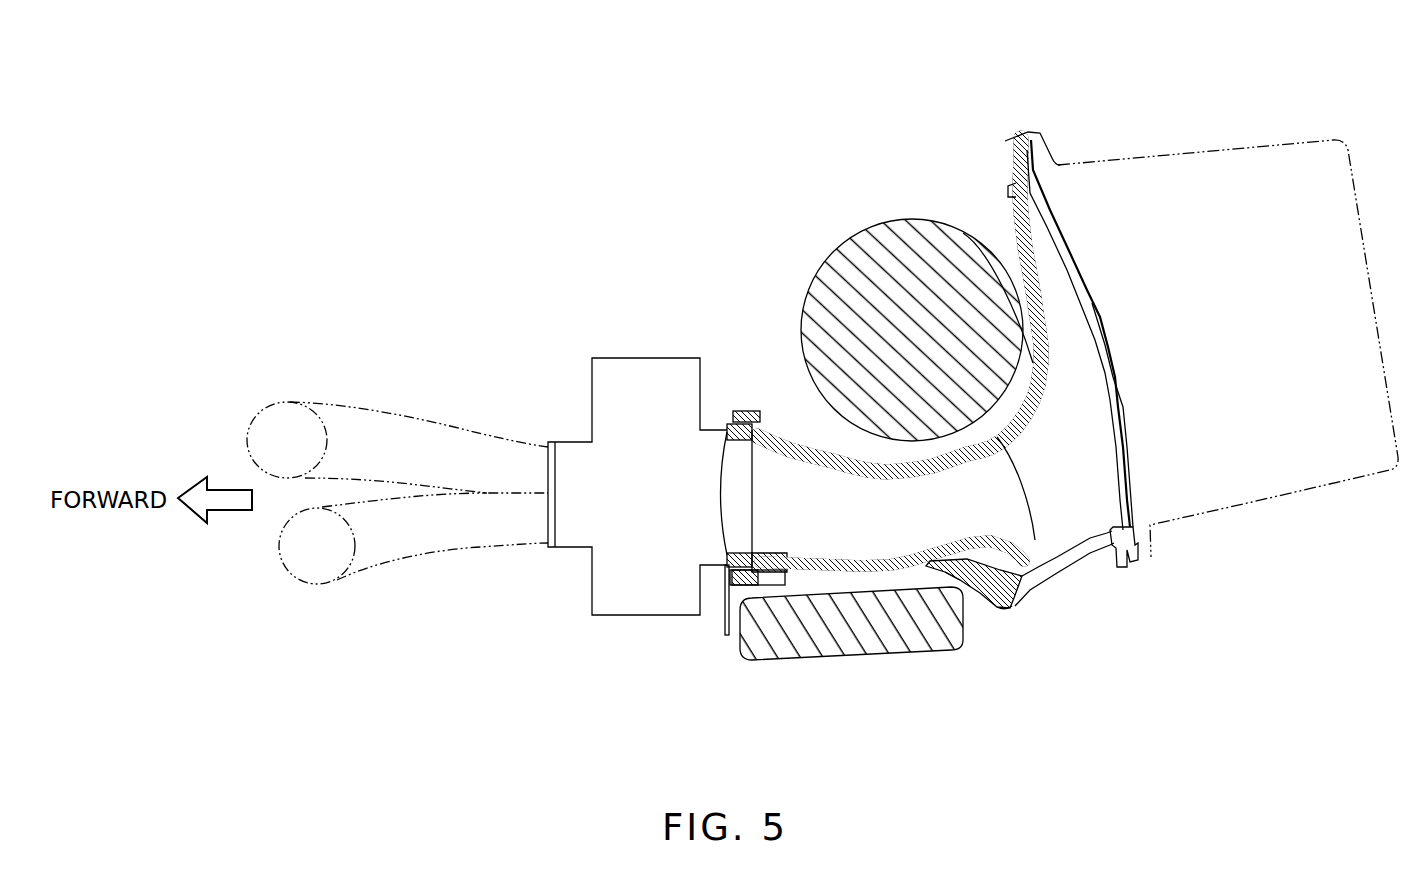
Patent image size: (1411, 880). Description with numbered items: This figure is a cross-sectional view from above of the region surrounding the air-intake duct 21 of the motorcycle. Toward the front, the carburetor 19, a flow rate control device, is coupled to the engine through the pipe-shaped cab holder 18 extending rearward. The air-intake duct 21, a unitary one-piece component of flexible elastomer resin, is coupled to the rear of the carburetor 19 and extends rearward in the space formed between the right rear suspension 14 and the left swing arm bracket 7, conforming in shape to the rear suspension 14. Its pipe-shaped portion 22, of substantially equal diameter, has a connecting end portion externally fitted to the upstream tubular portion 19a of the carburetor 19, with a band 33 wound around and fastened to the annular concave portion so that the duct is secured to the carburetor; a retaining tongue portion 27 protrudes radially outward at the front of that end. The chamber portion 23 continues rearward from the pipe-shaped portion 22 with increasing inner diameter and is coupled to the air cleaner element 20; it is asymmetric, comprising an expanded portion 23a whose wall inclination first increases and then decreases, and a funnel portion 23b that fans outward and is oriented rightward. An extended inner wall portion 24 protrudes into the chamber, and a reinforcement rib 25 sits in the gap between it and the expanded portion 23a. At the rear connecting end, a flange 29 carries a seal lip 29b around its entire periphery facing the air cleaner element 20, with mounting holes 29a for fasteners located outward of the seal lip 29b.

The swing arm bracket 7 is at (847, 662).
The rear suspension 14 is at (852, 232).
The cab holder 18 is at (433, 420).
The carburetor 19 is at (590, 586).
The upstream tubular portion 19a is at (714, 425).
The air cleaner element 20 is at (1252, 505).
The air-intake duct 21 is at (813, 430).
The pipe-shaped portion 22 is at (887, 568).
The chamber portion 23 is at (1040, 587).
The expanded portion 23a is at (1018, 611).
The funnel portion 23b is at (1033, 362).
The extended inner wall portion 24 is at (1037, 541).
The reinforcement rib 25 is at (997, 563).
The retaining tongue portion 27 is at (724, 628).
The flange 29 is at (1013, 141).
The mounting holes 29a is at (1031, 133).
The seal lip 29b is at (1125, 567).
The band 33 is at (747, 408).